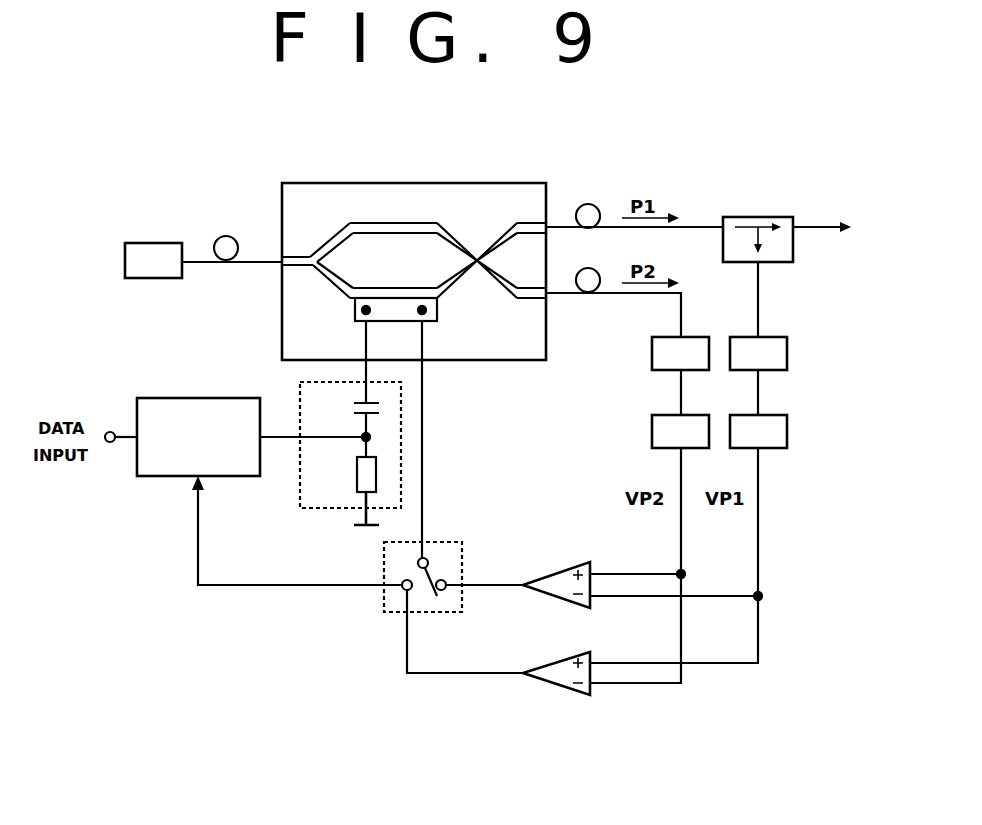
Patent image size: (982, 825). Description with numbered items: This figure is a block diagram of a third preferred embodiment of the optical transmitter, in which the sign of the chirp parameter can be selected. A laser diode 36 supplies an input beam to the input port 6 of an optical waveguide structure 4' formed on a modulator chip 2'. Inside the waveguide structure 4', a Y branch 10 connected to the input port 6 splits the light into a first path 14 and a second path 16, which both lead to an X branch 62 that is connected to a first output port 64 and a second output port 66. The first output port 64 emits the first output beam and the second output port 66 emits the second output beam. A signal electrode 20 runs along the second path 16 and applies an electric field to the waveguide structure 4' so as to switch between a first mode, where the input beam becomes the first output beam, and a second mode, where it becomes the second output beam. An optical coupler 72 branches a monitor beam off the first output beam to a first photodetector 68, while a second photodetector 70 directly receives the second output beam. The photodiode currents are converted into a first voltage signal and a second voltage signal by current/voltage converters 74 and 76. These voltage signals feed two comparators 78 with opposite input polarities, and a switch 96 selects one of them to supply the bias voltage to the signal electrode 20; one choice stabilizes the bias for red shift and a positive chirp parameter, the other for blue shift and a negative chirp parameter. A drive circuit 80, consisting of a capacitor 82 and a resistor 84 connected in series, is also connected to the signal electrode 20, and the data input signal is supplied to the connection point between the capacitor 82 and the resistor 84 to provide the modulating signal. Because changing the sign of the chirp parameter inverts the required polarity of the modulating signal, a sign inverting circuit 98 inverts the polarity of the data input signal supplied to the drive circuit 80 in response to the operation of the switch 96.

The modulator chip 2' is at (414, 256).
The optical waveguide structure 4' is at (300, 192).
The input port 6 is at (281, 257).
The Y branch 10 is at (312, 268).
The first path 14 is at (391, 223).
The second path 16 is at (345, 286).
The signal electrode 20 is at (394, 321).
The laser diode 36 is at (155, 243).
The X branch 62 is at (477, 268).
The first output port 64 is at (550, 223).
The second output port 66 is at (550, 288).
The first photodetector 68 is at (787, 353).
The second photodetector 70 is at (652, 353).
The optical coupler 72 is at (762, 217).
The current/voltage converter 74 is at (787, 432).
The current/voltage converter 76 is at (652, 432).
The comparator 78 is at (573, 562).
The drive circuit 80 is at (300, 497).
The capacitor 82 is at (355, 410).
The resistor 84 is at (357, 476).
The switch 96 is at (384, 563).
The sign inverting circuit 98 is at (200, 398).